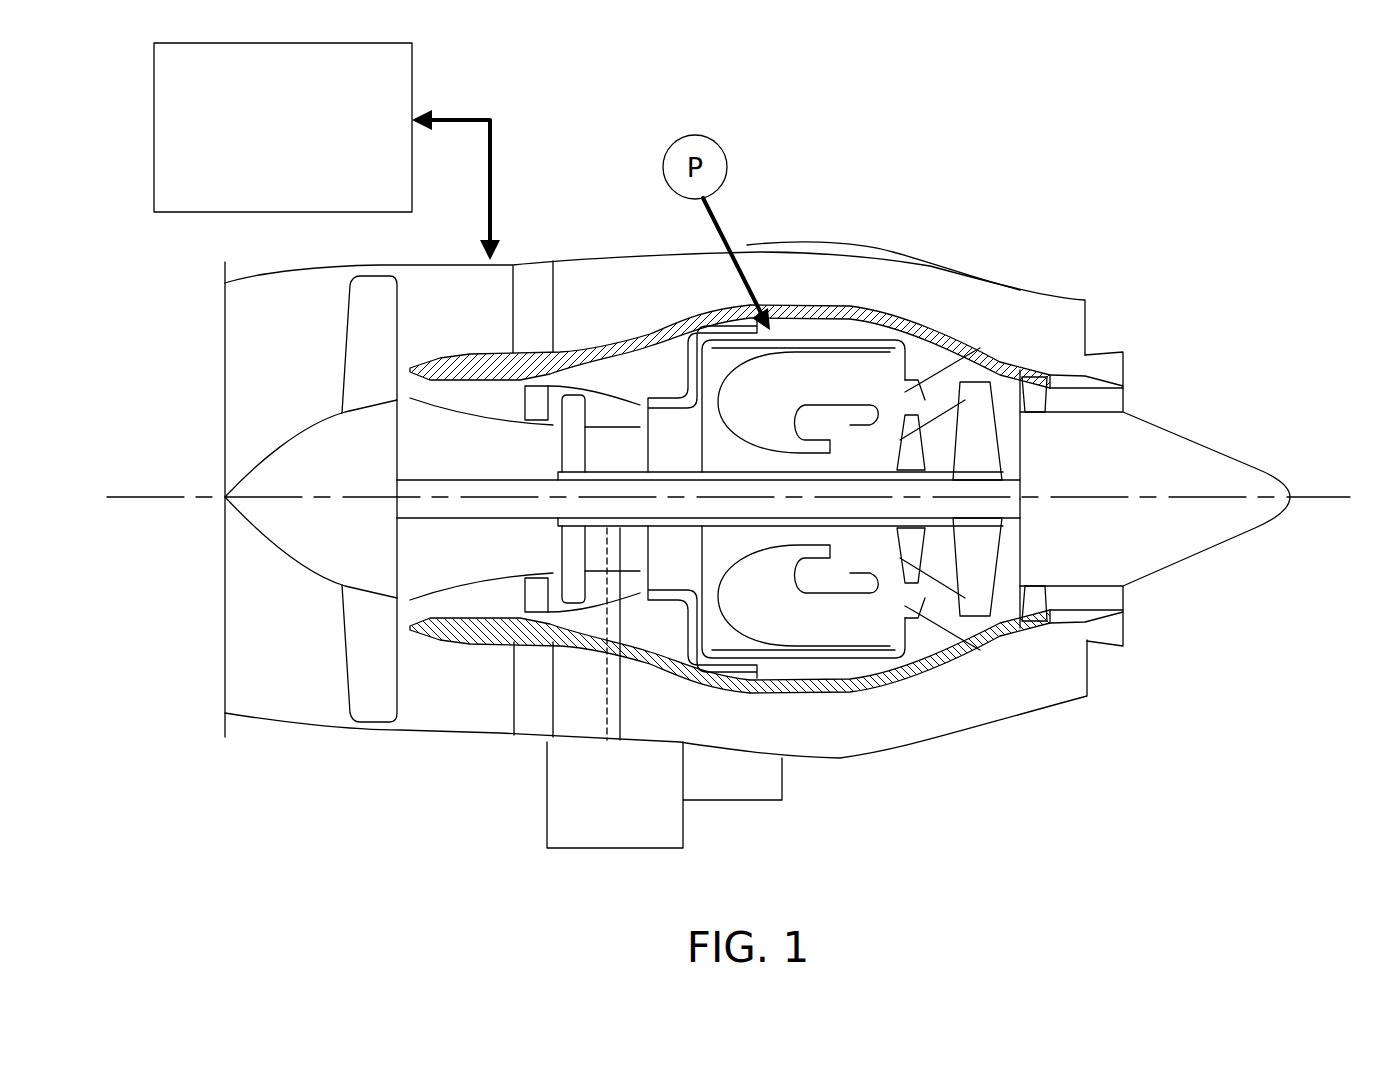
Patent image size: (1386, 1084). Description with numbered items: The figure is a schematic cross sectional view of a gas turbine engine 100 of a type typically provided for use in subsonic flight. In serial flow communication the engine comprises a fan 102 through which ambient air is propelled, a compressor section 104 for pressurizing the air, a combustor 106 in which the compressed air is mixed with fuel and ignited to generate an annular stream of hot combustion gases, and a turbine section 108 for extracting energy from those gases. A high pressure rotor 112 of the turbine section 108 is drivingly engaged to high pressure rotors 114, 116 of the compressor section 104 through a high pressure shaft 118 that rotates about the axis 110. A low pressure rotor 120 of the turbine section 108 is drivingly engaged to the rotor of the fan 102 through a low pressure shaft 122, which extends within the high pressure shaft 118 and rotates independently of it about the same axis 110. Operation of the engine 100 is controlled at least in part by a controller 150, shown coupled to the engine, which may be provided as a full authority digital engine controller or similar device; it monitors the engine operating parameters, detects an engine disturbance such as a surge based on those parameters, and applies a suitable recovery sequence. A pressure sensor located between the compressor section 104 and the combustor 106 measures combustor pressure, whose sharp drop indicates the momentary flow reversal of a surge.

The gas turbine engine 100 is at (962, 192).
The fan 102 is at (365, 647).
The compressor section 104 is at (606, 405).
The combustor 106 is at (812, 365).
The turbine section 108 is at (1002, 516).
The axis 110 is at (1325, 497).
The high pressure rotor 112 is at (900, 443).
The high pressure rotor 114 is at (670, 432).
The high pressure rotor 116 is at (572, 432).
The high pressure shaft 118 is at (800, 530).
The low pressure rotor 120 is at (978, 420).
The low pressure shaft 122 is at (440, 520).
The controller 150 is at (305, 158).